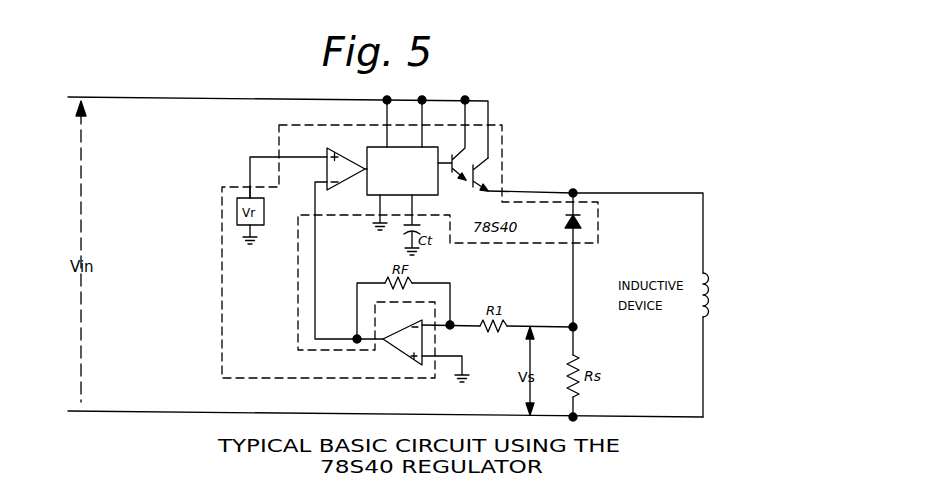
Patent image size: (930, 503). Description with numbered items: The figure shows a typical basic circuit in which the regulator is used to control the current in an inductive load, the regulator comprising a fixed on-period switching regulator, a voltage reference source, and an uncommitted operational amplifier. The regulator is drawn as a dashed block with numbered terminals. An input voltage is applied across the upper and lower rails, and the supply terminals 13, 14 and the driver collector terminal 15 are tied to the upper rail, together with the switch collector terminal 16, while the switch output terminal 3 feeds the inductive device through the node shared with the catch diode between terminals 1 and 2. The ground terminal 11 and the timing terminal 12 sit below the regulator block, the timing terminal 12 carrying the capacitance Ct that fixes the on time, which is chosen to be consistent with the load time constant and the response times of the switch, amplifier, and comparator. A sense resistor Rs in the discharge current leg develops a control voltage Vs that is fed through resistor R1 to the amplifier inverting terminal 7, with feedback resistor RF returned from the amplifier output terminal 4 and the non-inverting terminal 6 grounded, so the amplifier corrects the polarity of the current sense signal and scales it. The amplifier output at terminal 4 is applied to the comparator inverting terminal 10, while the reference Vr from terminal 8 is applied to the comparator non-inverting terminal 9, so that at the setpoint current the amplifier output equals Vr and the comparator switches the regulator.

The diode anode pin of 78S40 regulator 1 is at (576, 209).
The diode cathode pin of 78S40 regulator 2 is at (578, 279).
The switch emitter output pin of 78S40 regulator 3 is at (532, 185).
The op amp output pin of 78S40 regulator 4 is at (403, 308).
The op amp non-inverting input pin of 78S40 regulator 6 is at (445, 361).
The op amp inverting input pin of 78S40 regulator 7 is at (497, 319).
The reference voltage output pin of 78S40 regulator 8 is at (255, 184).
The comparator non-inverting input pin of 78S40 regulator 9 is at (288, 167).
The comparator inverting input pin of 78S40 regulator 10 is at (347, 262).
The ground pin of 78S40 regulator 11 is at (387, 212).
The timing capacitor pin of 78S40 regulator 12 is at (419, 225).
The supply voltage pin of 78S40 regulator 13 is at (397, 123).
The current sense pin of 78S40 regulator 14 is at (433, 123).
The driver collector pin of 78S40 regulator 15 is at (461, 140).
The switch collector pin of 78S40 regulator 16 is at (493, 150).